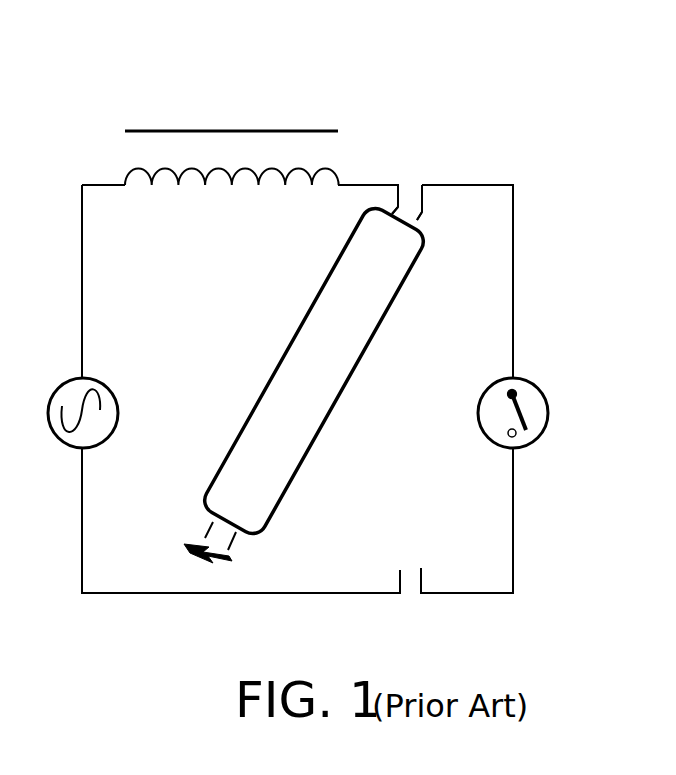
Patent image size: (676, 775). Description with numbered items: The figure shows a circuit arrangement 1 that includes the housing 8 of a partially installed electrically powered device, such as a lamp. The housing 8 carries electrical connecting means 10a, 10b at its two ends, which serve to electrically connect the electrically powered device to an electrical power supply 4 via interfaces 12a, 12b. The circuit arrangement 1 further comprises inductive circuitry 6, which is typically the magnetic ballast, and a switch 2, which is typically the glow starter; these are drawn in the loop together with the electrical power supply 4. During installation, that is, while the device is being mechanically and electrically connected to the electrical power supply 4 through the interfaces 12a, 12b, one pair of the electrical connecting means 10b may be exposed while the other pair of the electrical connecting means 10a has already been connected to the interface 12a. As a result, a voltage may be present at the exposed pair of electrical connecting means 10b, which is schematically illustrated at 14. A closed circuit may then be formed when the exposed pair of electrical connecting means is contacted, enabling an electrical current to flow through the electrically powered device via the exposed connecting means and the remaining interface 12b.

The circuit arrangement 1 is at (511, 84).
The switch 2 is at (540, 393).
The electrical power supply 4 is at (52, 426).
The inductive circuitry 6 is at (126, 162).
The housing 8 is at (345, 390).
The electrical connecting means 10a is at (421, 217).
The electrical connecting means 10b is at (233, 540).
The interface 12a is at (410, 186).
The interface 12b is at (412, 603).
The voltage present at exposed connecting means 14 is at (190, 545).